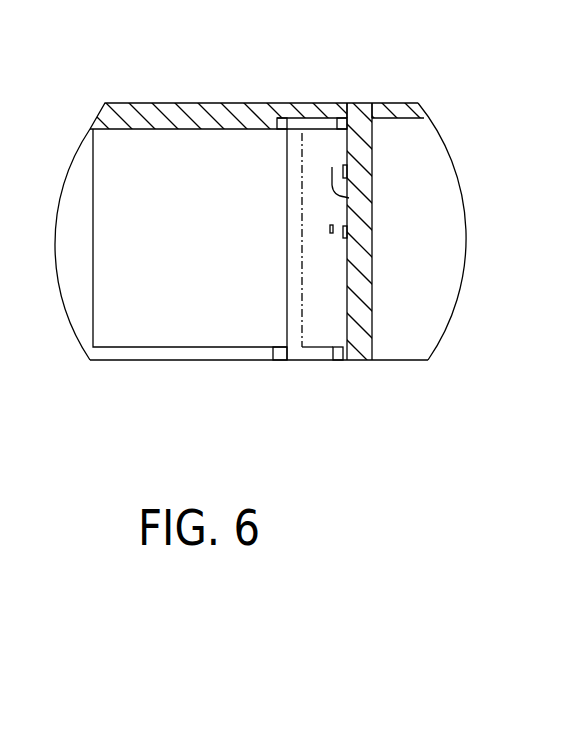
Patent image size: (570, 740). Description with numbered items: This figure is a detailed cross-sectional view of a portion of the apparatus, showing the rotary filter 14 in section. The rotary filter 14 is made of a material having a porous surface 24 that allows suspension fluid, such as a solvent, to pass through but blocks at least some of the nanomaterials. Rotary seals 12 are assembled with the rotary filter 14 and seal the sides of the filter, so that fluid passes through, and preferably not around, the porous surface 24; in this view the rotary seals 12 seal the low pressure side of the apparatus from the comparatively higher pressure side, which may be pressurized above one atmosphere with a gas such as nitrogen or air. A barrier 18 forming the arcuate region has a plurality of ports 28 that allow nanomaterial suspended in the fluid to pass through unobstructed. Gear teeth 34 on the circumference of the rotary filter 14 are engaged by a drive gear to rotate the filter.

The rotary seals 12 is at (282, 127).
The rotary filter 14 is at (325, 112).
The barrier 18 is at (357, 169).
The porous surface 24 is at (325, 237).
The ports 28 is at (349, 198).
The gear teeth 34 is at (352, 112).